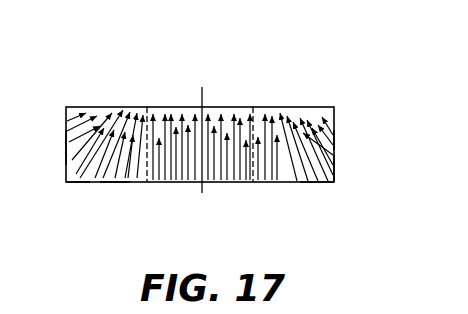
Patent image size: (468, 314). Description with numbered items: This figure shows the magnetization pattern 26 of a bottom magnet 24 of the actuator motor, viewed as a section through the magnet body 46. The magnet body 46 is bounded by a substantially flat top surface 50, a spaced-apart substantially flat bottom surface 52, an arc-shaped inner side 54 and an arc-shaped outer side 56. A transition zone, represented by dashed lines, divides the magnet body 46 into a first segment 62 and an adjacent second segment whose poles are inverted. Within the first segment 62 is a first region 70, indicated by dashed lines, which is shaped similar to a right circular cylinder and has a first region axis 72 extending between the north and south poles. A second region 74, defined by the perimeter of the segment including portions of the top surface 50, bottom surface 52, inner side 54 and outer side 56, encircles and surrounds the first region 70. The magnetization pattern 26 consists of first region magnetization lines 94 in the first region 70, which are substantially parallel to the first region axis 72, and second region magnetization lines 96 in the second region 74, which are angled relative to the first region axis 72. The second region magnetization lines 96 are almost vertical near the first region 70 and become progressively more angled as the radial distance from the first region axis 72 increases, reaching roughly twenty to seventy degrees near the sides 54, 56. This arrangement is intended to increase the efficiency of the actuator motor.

The magnet 24 is at (323, 95).
The magnetization pattern 26 is at (262, 106).
The magnet body 46 is at (336, 140).
The top surface 50 is at (110, 105).
The bottom surface 52 is at (74, 183).
The inner side 54 is at (334, 163).
The outer side 56 is at (66, 147).
The first segment 62 is at (161, 105).
The first region 70 is at (257, 205).
The first region axis 72 is at (208, 88).
The second region 74 is at (115, 184).
The first region magnetization lines 94 is at (150, 183).
The second region magnetization lines 96 is at (287, 133).